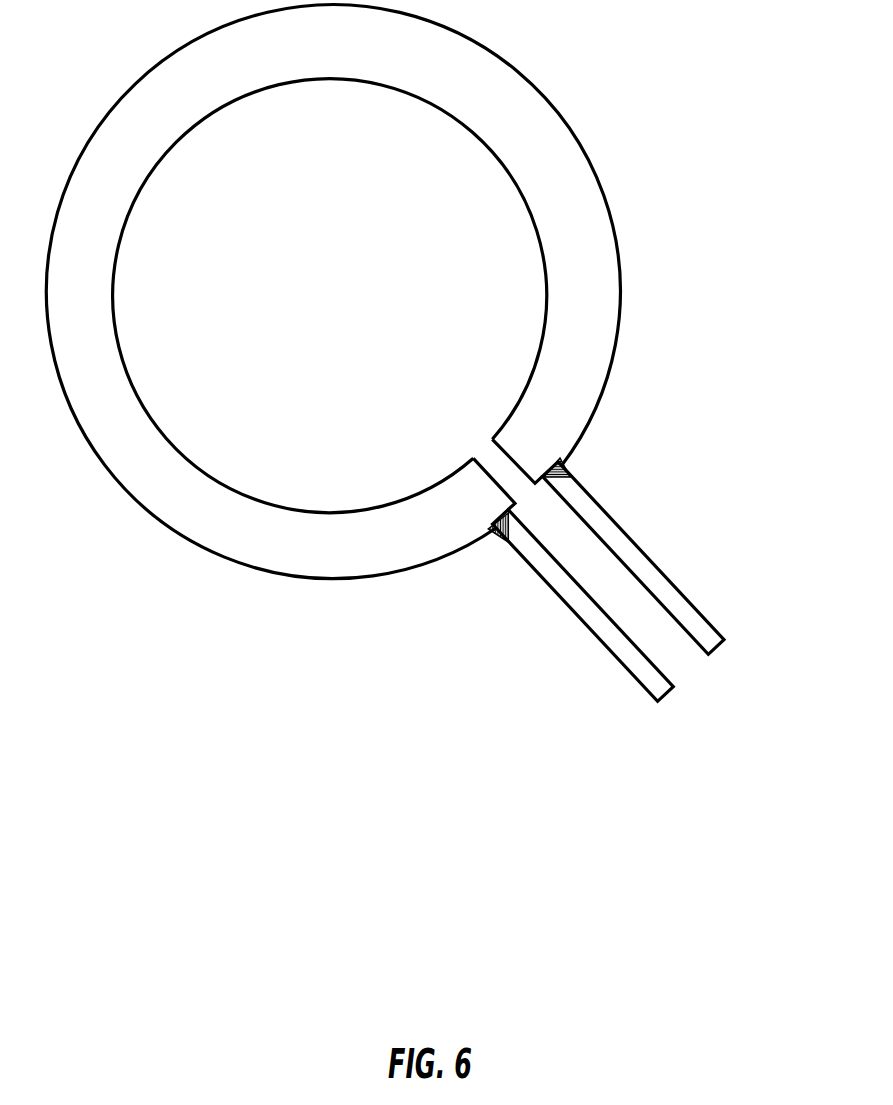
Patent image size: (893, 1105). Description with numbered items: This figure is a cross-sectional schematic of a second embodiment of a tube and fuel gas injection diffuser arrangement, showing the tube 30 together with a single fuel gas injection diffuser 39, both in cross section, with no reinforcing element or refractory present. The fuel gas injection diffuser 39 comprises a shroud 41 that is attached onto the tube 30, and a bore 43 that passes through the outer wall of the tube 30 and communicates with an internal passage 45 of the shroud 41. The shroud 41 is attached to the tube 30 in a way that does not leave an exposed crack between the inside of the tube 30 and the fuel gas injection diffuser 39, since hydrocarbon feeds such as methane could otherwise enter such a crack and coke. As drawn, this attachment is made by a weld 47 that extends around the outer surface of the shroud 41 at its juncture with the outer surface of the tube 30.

The tube 30 is at (620, 284).
The fuel gas injection diffuser 39 is at (593, 482).
The shroud 41 is at (629, 537).
The bore 43 is at (495, 468).
The internal passage 45 is at (629, 600).
The weld 47 is at (500, 540).